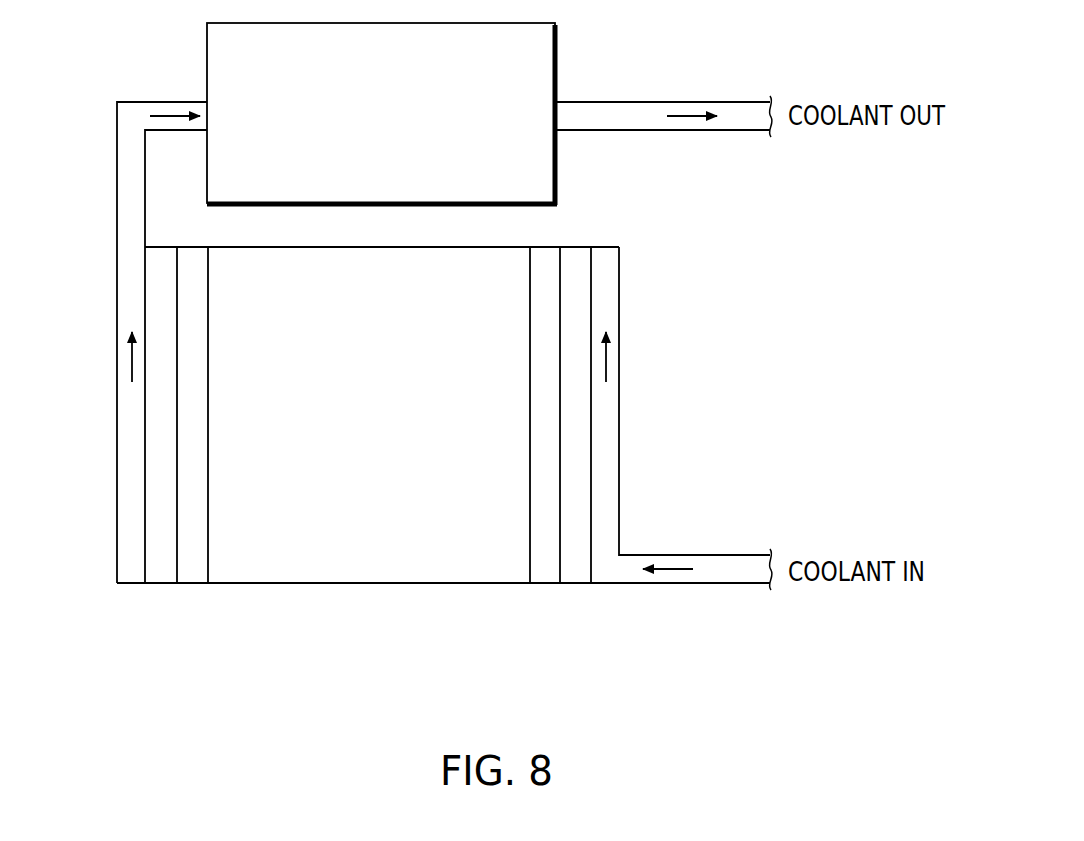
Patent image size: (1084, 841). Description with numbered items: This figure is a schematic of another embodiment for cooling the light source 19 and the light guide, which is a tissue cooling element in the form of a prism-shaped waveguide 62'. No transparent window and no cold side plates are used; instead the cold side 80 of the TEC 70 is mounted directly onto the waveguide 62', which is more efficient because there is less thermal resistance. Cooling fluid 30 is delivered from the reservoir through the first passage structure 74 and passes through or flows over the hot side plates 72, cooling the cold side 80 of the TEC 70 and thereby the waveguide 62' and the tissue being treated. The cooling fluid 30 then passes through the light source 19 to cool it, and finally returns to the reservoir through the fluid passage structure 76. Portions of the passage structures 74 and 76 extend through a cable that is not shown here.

The light source 19 is at (395, 159).
The waveguide 62' is at (443, 415).
The cooling fluid 30 is at (685, 130).
The TEC 70 is at (192, 585).
The hot side plates 72 is at (160, 585).
The first passage structure 74 is at (621, 413).
The fluid passage structure 76 is at (745, 100).
The cold side 80 is at (208, 415).